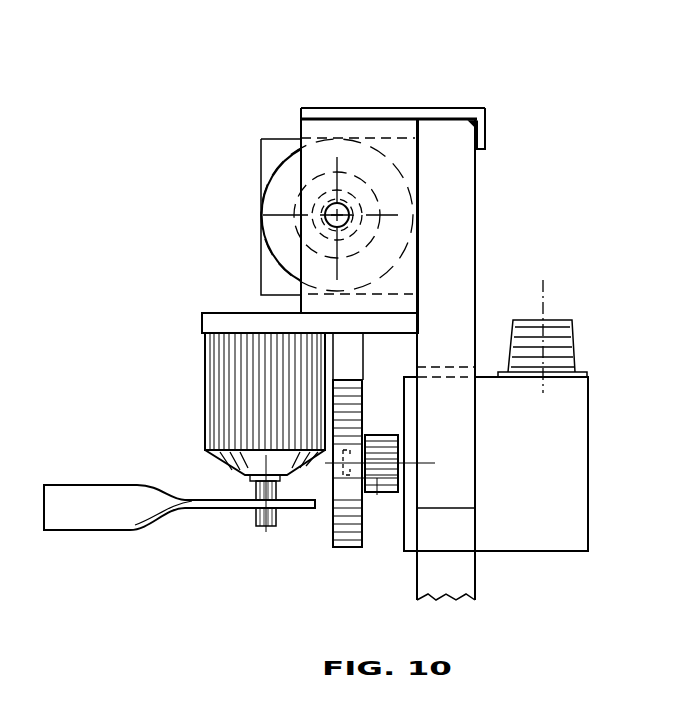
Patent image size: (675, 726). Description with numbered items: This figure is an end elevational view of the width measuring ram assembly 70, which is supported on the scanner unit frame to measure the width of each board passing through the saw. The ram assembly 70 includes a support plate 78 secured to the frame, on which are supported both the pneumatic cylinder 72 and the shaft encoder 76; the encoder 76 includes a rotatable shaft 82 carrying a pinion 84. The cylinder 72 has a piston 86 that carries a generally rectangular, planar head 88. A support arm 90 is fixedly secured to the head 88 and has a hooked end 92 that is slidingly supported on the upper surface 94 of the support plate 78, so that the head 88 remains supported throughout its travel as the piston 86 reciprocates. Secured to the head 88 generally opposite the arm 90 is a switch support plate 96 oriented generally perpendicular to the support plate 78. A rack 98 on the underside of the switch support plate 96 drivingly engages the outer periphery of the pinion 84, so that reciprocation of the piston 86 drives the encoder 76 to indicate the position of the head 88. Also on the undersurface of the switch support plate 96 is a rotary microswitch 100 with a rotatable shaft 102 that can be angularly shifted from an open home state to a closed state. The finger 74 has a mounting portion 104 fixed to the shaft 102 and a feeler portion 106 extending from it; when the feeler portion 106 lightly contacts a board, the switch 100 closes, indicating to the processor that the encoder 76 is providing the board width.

The ram assembly 70 is at (186, 195).
The pneumatic cylinder 72 is at (282, 153).
The finger 74 is at (112, 482).
The shaft encoder 76 is at (536, 446).
The support plate 78 is at (453, 200).
The rotatable shaft 82 is at (378, 495).
The pinion 84 is at (345, 548).
The piston 86 is at (335, 203).
The head 88 is at (358, 127).
The support arm 90 is at (402, 101).
The hooked end 92 is at (478, 131).
The upper surface 94 is at (447, 118).
The switch support plate 96 is at (240, 325).
The rack 98 is at (350, 367).
The rotary microswitch 100 is at (306, 378).
The rotatable shaft 102 is at (268, 530).
The mounting portion 104 is at (205, 505).
The feeler portion 106 is at (90, 518).